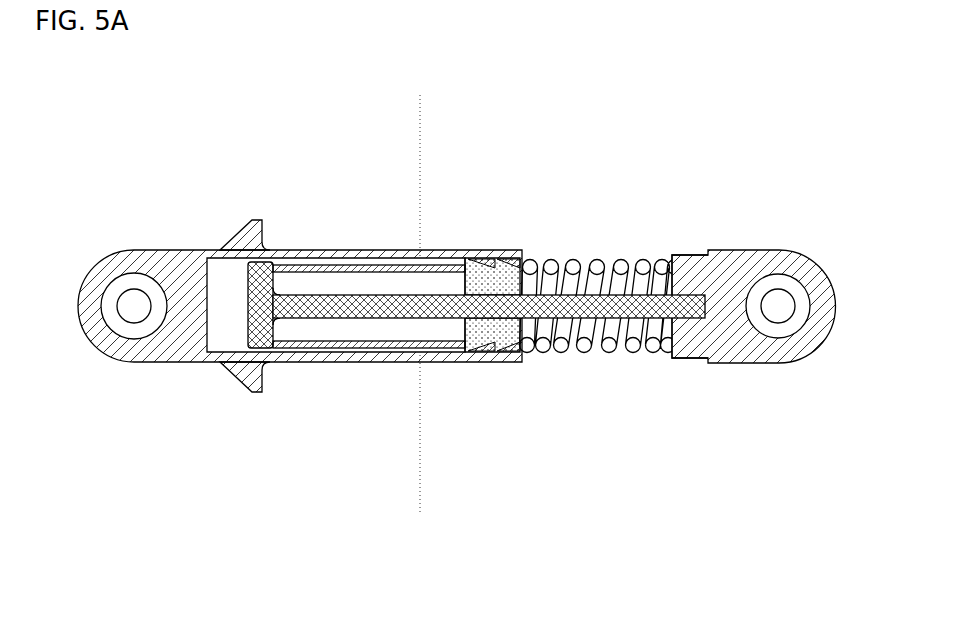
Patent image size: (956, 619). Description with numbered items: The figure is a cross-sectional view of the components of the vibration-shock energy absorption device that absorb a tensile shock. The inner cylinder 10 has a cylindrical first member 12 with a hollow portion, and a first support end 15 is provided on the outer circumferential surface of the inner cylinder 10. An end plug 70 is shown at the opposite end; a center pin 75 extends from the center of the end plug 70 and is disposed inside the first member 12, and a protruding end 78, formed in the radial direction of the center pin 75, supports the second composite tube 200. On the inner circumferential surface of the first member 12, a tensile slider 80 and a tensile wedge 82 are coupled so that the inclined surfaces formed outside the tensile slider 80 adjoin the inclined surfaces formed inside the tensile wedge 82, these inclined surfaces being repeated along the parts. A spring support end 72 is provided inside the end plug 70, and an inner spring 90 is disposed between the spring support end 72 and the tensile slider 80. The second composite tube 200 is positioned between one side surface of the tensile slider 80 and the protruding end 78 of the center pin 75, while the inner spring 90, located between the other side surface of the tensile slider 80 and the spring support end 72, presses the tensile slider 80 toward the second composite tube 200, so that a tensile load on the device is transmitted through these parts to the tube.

The inner cylinder 10 is at (134, 250).
The first member 12 is at (323, 362).
The first support end 15 is at (240, 387).
The end plug 70 is at (788, 264).
The spring support end 72 is at (687, 360).
The center pin 75 is at (395, 318).
The protruding end 78 is at (264, 258).
The tensile slider 80 is at (478, 264).
The tensile wedge 82 is at (512, 264).
The inner spring 90 is at (593, 262).
The second composite tube 200 is at (358, 264).